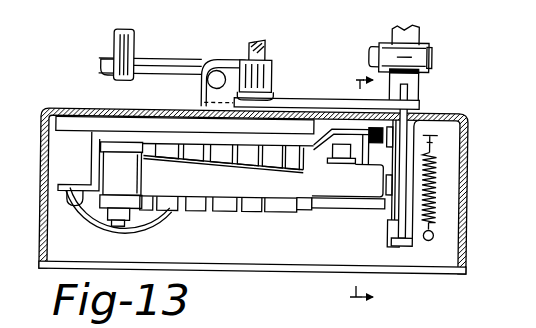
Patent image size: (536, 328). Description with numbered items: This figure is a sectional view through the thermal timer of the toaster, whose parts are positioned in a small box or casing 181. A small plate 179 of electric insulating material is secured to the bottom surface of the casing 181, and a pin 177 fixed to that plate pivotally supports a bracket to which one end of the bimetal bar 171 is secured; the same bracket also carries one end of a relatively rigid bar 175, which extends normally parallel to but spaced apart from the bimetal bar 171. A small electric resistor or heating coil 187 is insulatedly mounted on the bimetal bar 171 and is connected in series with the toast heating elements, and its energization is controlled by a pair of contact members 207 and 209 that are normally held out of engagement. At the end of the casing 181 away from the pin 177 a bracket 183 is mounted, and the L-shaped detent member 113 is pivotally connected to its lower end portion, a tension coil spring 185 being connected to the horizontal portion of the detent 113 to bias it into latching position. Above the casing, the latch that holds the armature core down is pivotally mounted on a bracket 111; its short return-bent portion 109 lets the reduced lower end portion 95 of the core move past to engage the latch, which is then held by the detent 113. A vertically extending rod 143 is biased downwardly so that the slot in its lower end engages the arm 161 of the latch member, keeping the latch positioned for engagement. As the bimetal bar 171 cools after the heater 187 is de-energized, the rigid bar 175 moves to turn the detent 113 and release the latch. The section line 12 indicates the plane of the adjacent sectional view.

The box or casing 181 is at (68, 108).
The small plate of electric insulating material 179 is at (70, 134).
The pin 177 is at (127, 228).
The contact member 209 is at (326, 138).
The electric resistor or heating coil 187 is at (223, 213).
The relatively rigid bar 175 is at (305, 209).
The contact member 207 is at (342, 163).
The bimetal bar 171 is at (365, 207).
The bracket 183 is at (407, 247).
The tension coil spring 185 is at (437, 173).
The detent 113 is at (406, 88).
The rod 143 is at (132, 34).
The arm 161 is at (98, 60).
The bracket 111 is at (199, 88).
The lower end portion 95 is at (270, 72).
The return-bent portion 109 is at (228, 50).
The section line 12- 12 is at (346, 190).